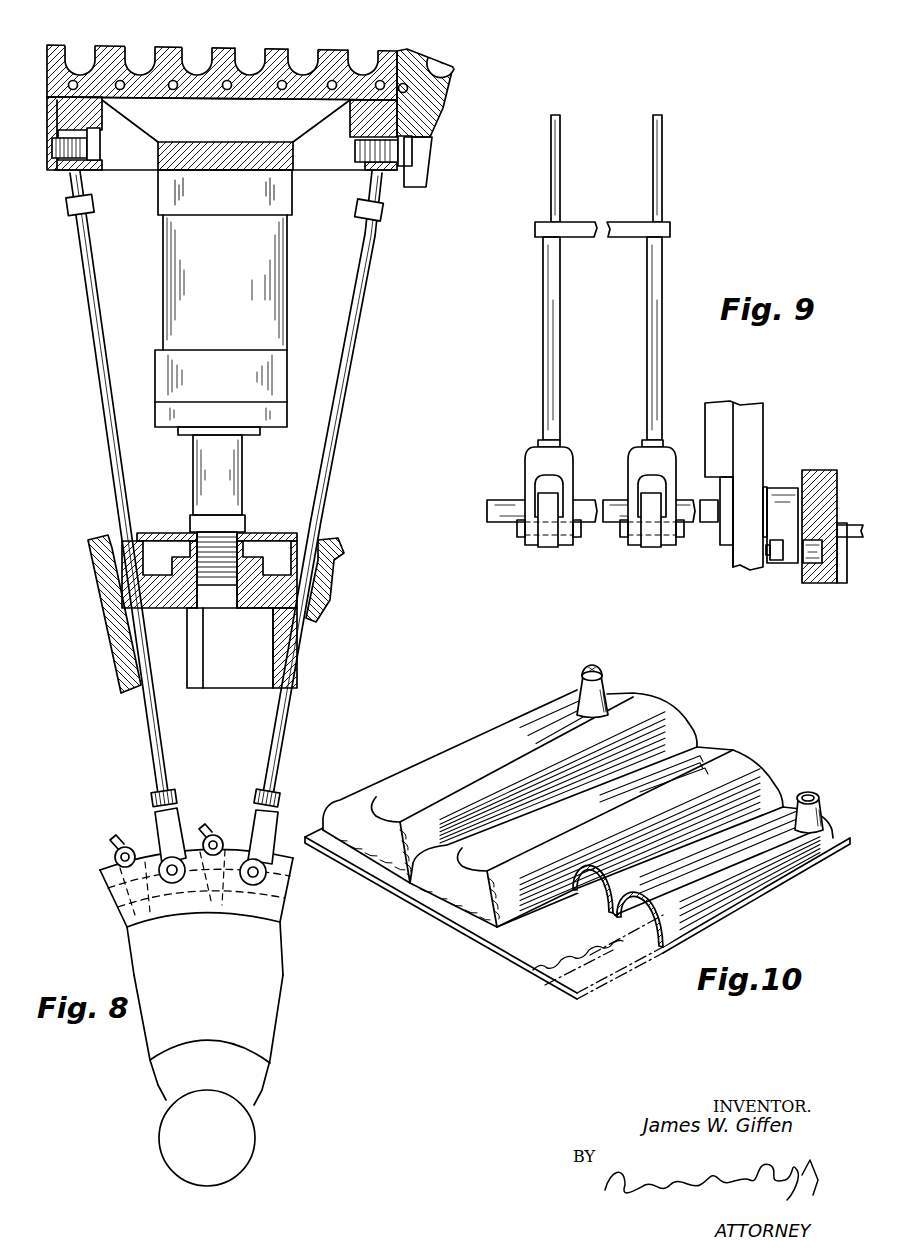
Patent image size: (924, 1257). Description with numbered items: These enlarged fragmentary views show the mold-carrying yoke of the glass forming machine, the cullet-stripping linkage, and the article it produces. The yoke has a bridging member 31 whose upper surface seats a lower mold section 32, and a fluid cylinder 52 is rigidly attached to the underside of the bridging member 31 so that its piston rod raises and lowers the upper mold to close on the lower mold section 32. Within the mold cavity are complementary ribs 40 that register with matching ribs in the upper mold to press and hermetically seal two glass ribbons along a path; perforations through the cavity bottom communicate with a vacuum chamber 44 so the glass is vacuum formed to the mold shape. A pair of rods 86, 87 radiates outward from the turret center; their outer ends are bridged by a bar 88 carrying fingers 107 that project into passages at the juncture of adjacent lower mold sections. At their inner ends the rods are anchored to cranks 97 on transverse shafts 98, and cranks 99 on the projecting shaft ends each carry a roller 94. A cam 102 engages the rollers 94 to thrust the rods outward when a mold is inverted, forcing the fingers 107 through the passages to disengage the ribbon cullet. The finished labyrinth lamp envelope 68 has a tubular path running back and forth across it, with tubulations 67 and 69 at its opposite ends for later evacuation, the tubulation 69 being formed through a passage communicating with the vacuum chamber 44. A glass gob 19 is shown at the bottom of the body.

In FIG. 8, the glass ball / gob at bottom of body 19 is at (160, 1124).
In FIG. 8, the bridging member 31 is at (264, 142).
In FIG. 8, the lower mold section 32 is at (152, 103).
In FIG. 8, the ribs 40 is at (191, 50).
In FIG. 8, the vacuum chamber 44 is at (228, 93).
In FIG. 8, the fluid cylinder 52 is at (292, 206).
In FIG. 10, the tubulation 67 is at (810, 792).
In FIG. 10, the labyrinth lamp envelope 68 is at (477, 735).
In FIG. 10, the tubulation 69 is at (603, 684).
In FIG. 8, the rod 86 is at (106, 443).
In FIG. 9, the rod 86 is at (560, 293).
In FIG. 9, the rod 87 is at (647, 330).
In FIG. 8, the bar 88 is at (89, 208).
In FIG. 9, the bar 88 is at (642, 222).
In FIG. 9, the roller 94 is at (816, 566).
In FIG. 8, the crank 97 is at (268, 829).
In FIG. 9, the crank 97 is at (528, 462).
In FIG. 8, the transverse shaft 98 is at (282, 872).
In FIG. 9, the transverse shaft 98 is at (503, 498).
In FIG. 8, the crank 99 is at (240, 835).
In FIG. 9, the crank 99 is at (783, 489).
In FIG. 9, the cam 102 is at (820, 472).
In FIG. 8, the fingers 107 is at (80, 178).
In FIG. 9, the fingers 107 is at (559, 171).